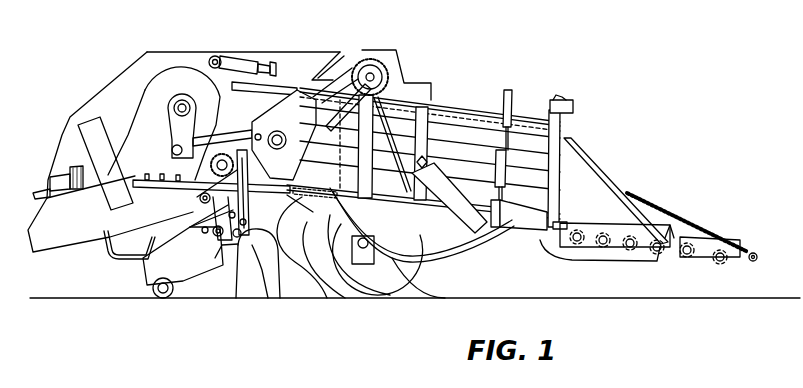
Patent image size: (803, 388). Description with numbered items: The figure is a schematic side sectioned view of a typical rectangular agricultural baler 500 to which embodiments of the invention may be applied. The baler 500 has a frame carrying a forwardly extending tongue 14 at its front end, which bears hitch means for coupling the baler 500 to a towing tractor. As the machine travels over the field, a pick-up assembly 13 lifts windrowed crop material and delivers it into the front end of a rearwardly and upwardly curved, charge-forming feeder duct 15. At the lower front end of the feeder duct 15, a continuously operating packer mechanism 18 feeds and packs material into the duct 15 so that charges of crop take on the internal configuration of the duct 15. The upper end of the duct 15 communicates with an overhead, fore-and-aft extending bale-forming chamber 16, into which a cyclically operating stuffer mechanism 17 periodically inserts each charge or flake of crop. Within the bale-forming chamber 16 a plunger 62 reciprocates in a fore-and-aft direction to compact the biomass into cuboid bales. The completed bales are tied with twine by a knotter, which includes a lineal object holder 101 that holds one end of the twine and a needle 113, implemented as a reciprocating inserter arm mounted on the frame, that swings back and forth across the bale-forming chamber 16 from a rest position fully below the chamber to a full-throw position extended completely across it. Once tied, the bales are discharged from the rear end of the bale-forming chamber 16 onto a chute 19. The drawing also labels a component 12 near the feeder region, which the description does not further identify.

The agricultural baler 500 is at (394, 185).
The pickup linkage 12 is at (288, 196).
The pick-up assembly 13 is at (199, 298).
The tongue 14 is at (80, 233).
The feeder duct 15 is at (253, 260).
The bale-forming chamber 16 is at (466, 133).
The stuffer mechanism 17 is at (258, 233).
The packer mechanism 18 is at (237, 245).
The chute 19 is at (699, 192).
The plunger 62 is at (290, 117).
The lineal object holder 101 is at (352, 58).
The needle 113 is at (417, 232).